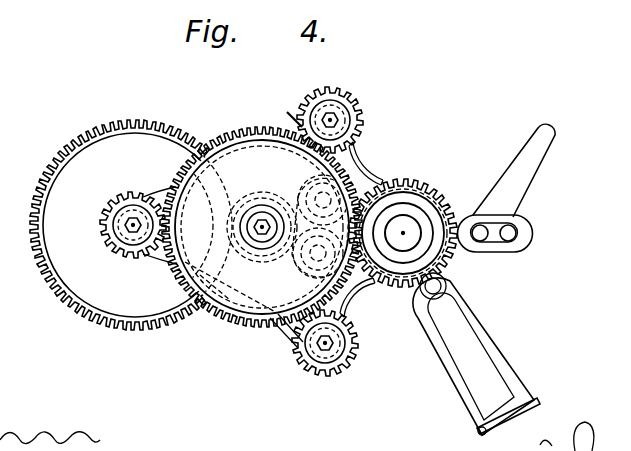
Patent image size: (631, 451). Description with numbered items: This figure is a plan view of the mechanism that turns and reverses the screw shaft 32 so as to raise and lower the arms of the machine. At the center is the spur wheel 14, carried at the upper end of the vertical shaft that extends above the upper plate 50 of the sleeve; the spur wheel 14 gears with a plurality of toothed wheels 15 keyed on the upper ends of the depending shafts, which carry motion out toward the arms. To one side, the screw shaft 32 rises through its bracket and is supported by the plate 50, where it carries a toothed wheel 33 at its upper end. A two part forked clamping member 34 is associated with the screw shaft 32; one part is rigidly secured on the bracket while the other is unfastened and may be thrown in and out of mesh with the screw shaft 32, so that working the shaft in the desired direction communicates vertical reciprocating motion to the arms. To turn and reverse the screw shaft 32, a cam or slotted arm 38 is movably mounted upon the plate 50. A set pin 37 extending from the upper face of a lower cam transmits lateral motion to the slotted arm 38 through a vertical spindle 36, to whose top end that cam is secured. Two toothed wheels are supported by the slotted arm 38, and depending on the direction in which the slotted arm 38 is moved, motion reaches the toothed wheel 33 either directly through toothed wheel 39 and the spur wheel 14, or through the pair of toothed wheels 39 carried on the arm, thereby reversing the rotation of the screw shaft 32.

The spur wheel 14 is at (258, 243).
The toothed wheels 15 is at (125, 198).
The screw shaft 32 is at (402, 243).
The toothed wheel 33 is at (437, 186).
The two part forked clamping member 34 is at (500, 360).
The vertical spindle 36 is at (481, 244).
The set pin 37 is at (526, 246).
The slotted arm 38 is at (526, 223).
The toothed wheel 39 is at (352, 170).
The upper plate 50 is at (282, 110).